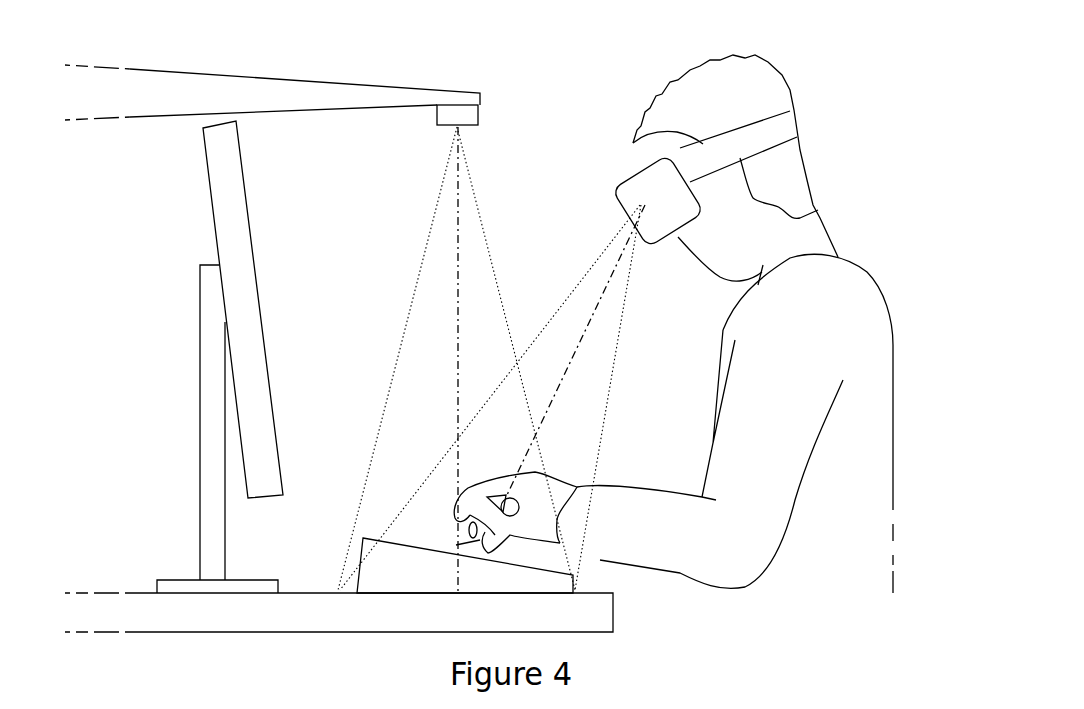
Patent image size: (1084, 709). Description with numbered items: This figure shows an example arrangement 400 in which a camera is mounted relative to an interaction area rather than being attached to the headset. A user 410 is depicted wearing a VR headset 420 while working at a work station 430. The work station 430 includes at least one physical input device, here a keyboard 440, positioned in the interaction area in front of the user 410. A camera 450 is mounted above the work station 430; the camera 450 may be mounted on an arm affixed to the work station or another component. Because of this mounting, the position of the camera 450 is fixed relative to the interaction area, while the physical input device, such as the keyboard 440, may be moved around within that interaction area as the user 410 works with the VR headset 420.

The example arrangement 400 is at (846, 107).
The user 410 is at (852, 262).
The VR headset 420 is at (630, 185).
The work station 430 is at (587, 622).
The keyboard 440 is at (397, 572).
The camera 450 is at (455, 112).